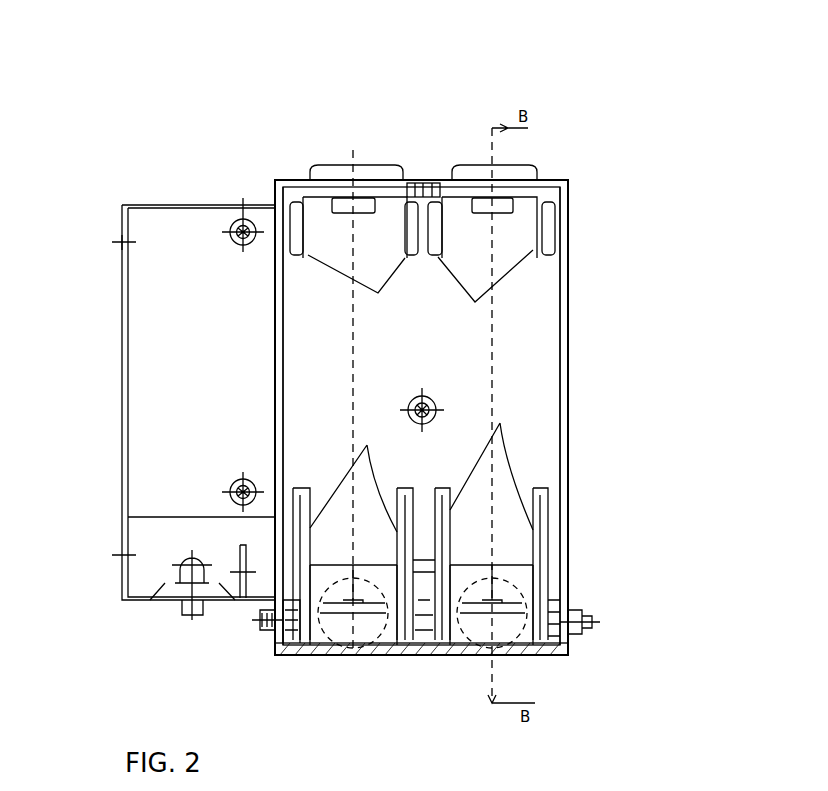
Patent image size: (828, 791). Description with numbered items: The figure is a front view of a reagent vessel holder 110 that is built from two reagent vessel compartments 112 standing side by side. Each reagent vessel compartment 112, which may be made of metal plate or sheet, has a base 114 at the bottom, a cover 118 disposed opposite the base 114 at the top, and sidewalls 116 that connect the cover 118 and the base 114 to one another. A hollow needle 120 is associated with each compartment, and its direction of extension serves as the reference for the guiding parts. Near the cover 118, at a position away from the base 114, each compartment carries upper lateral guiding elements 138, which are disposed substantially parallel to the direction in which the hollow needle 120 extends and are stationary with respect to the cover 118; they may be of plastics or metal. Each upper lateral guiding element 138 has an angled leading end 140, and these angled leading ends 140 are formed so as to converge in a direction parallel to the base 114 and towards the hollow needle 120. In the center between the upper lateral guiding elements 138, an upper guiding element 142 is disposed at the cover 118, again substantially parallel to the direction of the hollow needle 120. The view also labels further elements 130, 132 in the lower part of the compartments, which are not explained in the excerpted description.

The reagent vessel holder 110 is at (612, 150).
The reagent vessel compartment 112 is at (318, 330).
The base 114 is at (560, 655).
The sidewalls 116 is at (275, 388).
The cover 118 is at (408, 181).
The hollow needle 120 is at (493, 614).
The spring guide 130 is at (320, 498).
The spring guide 132 is at (478, 452).
The upper lateral guiding elements 138 is at (290, 205).
The angled leading end 140 is at (420, 288).
The upper guiding element 142 is at (342, 205).